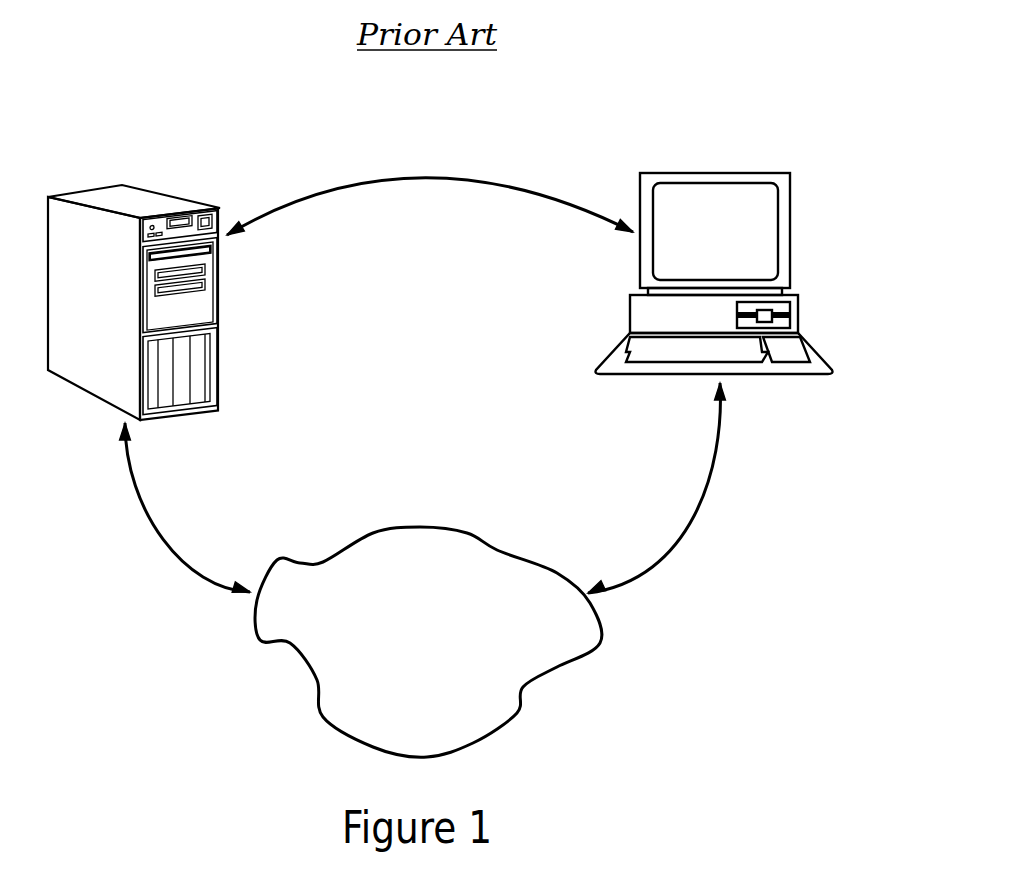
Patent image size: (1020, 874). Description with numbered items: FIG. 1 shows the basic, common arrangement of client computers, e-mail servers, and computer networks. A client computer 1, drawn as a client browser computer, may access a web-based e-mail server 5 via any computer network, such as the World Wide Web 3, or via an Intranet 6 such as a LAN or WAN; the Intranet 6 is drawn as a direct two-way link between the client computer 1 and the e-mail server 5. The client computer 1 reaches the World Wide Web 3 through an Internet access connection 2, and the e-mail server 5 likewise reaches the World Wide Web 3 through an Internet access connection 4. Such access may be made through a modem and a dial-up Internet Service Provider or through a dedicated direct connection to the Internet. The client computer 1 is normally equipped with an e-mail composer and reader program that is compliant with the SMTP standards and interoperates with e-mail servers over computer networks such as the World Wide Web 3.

The client computer 1 is at (800, 287).
The internet access connection (client) 2 is at (665, 553).
The World Wide Web 3 is at (485, 540).
The internet access connection (server) 4 is at (162, 550).
The web-based e-mail server 5 is at (222, 322).
The Intranet 6 is at (435, 177).